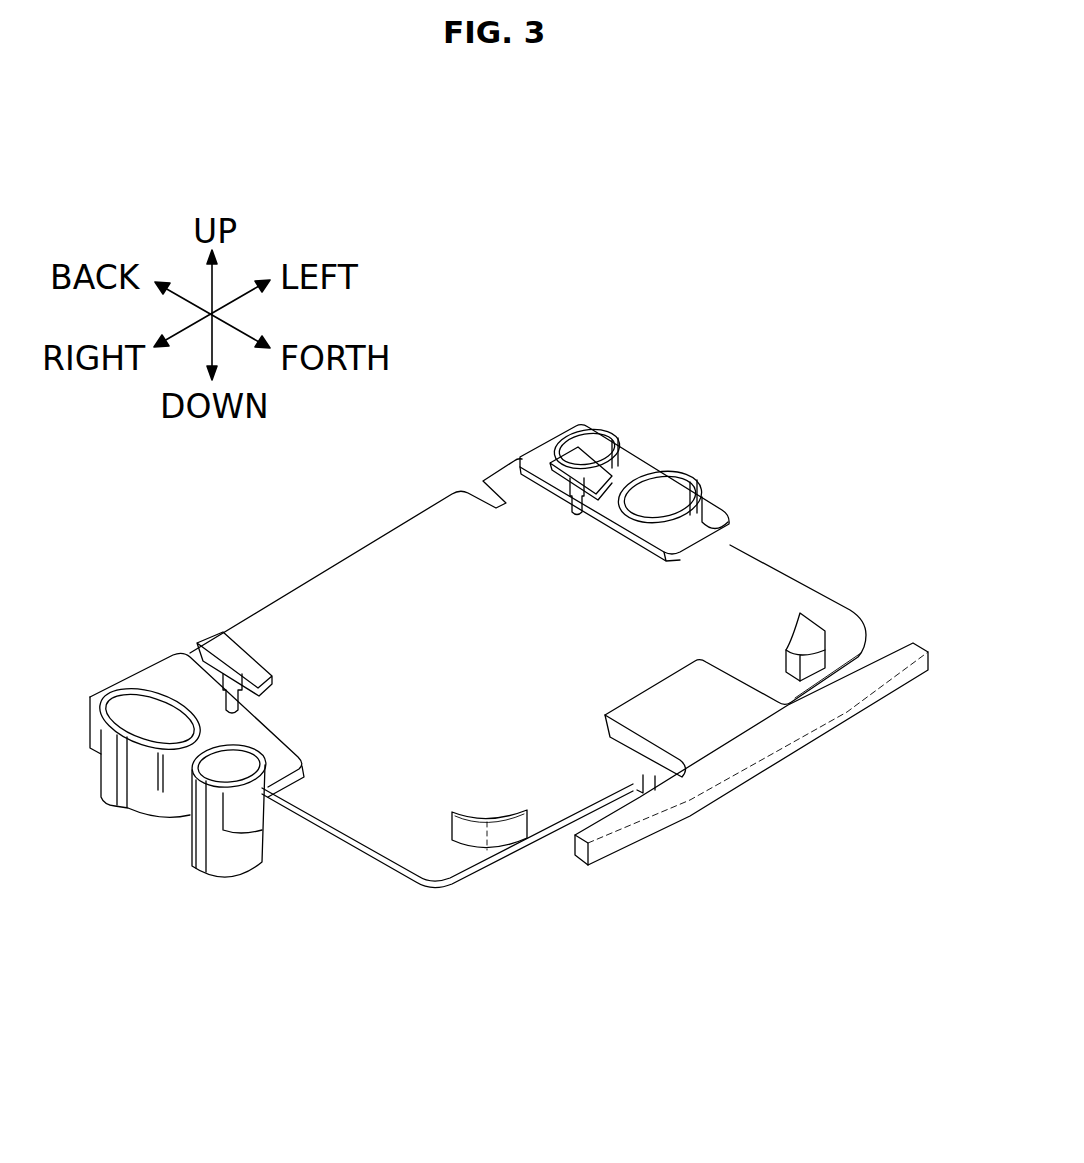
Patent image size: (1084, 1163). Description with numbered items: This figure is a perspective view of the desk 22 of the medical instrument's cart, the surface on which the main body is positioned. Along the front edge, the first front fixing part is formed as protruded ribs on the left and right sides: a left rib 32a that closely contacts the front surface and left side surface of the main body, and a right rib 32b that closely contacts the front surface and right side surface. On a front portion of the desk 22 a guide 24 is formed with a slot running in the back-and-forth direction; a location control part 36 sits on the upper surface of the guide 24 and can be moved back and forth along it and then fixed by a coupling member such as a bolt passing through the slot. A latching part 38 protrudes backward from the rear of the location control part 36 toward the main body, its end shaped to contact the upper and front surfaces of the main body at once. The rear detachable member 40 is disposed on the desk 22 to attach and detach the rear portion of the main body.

The desk 22 is at (747, 578).
The guide 24 is at (652, 776).
The left rib 32a is at (500, 840).
The right rib 32b is at (810, 630).
The location control part 36 is at (838, 704).
The latching part 38 is at (630, 695).
The rear detachable member 40 is at (573, 462).